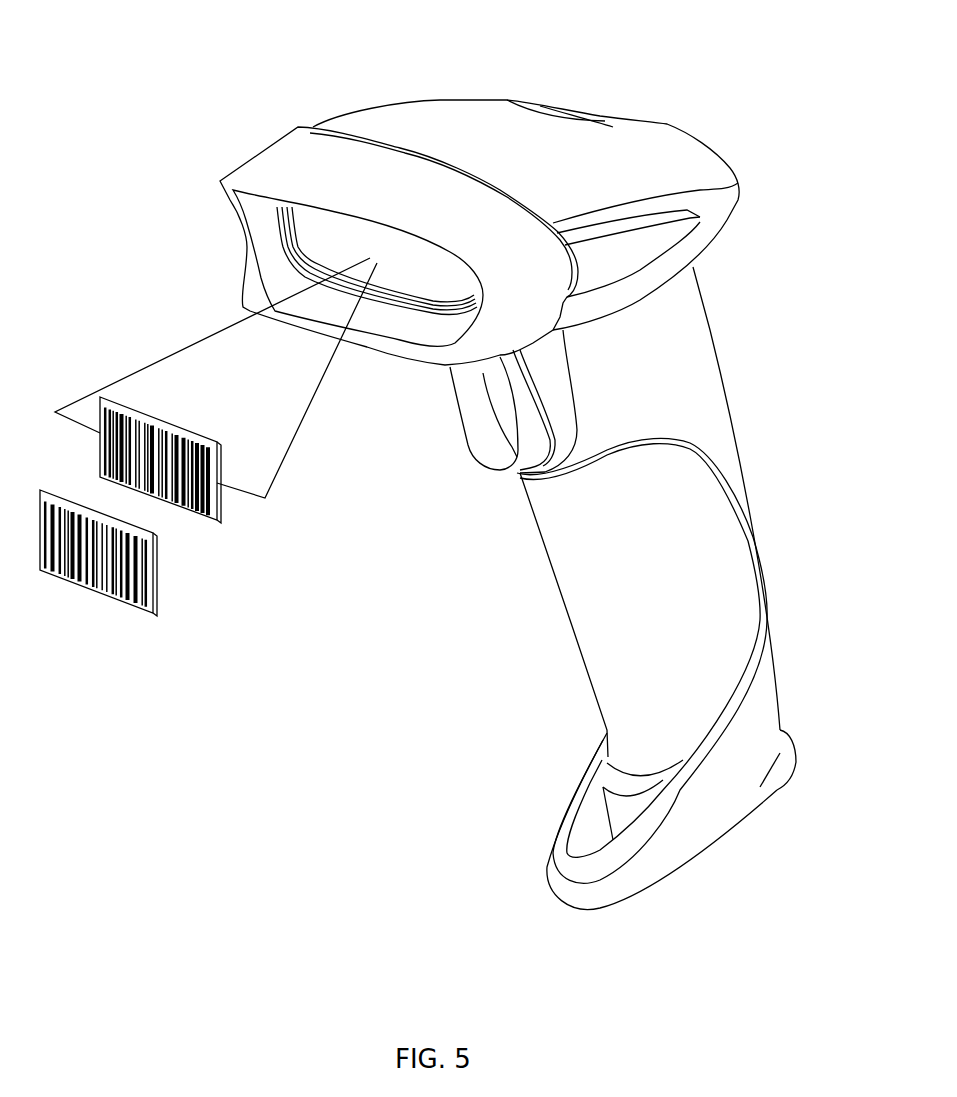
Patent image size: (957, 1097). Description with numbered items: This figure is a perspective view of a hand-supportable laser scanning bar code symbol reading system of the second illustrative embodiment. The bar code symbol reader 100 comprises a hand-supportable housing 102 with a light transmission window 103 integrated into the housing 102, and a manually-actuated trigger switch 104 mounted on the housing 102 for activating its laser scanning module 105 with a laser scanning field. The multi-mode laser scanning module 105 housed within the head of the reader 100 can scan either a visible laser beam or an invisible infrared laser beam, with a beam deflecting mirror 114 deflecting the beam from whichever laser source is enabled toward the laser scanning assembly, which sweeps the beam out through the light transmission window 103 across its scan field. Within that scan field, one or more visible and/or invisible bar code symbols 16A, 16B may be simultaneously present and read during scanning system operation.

The bar code symbol reader 100 is at (497, 454).
The hand-supportable housing 102 is at (740, 553).
The light transmission window 103 is at (327, 234).
The manually-actuated trigger switch 104 is at (480, 427).
The laser scanning module 105 is at (510, 165).
The beam deflecting mirror 114 is at (277, 477).
The bar code symbol 16A is at (217, 510).
The bar code symbol 16B is at (153, 600).